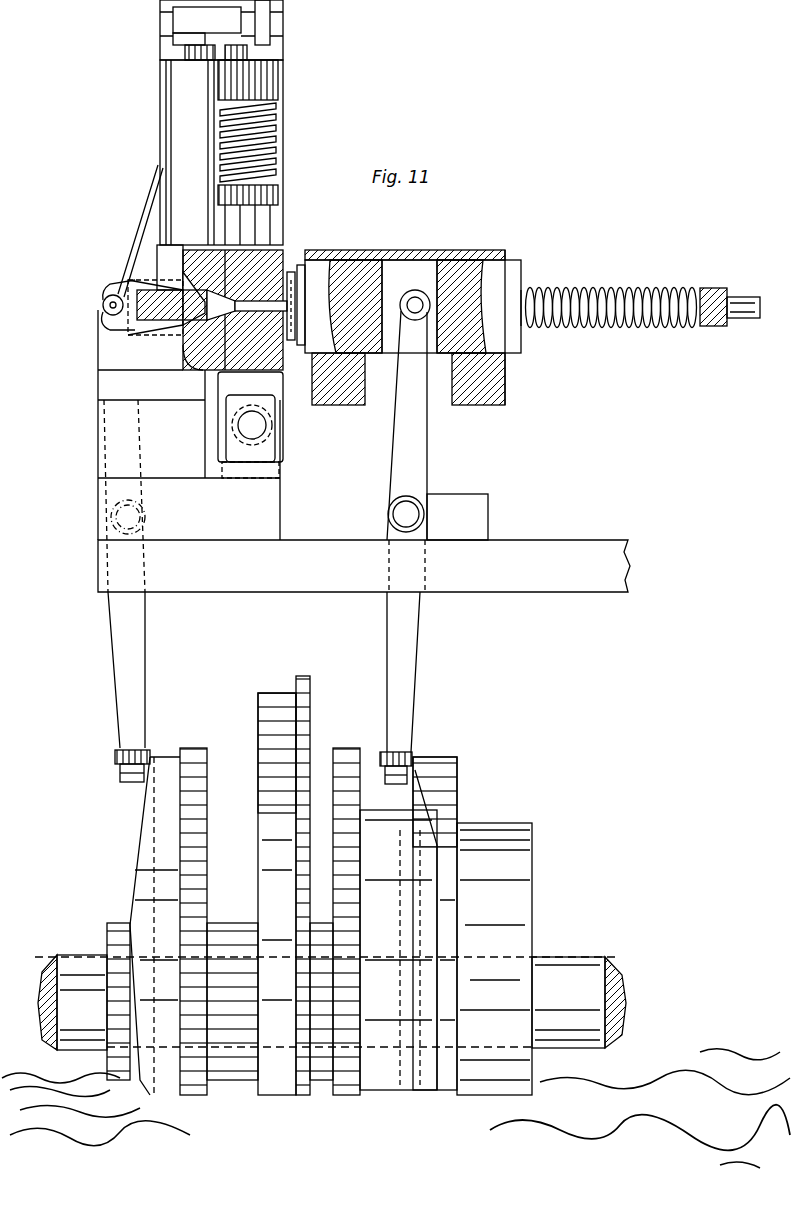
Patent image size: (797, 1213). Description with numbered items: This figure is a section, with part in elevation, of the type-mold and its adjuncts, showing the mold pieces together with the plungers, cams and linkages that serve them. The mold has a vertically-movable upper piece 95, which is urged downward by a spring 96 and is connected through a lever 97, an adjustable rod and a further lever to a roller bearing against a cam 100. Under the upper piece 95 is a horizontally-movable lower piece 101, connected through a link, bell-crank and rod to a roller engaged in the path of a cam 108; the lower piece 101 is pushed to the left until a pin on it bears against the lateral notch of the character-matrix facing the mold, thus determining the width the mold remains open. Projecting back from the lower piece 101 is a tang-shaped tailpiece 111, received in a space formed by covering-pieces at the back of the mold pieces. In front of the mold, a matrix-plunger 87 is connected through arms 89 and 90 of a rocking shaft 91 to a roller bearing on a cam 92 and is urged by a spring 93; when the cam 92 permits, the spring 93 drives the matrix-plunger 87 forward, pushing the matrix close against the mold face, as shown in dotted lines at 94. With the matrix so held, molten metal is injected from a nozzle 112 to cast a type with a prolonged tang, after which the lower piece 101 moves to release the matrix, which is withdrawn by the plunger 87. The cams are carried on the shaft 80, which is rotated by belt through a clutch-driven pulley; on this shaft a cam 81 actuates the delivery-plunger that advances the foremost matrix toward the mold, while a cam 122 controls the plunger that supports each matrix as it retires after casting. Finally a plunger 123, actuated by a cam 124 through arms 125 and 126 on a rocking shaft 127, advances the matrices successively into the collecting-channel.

The lever 97 is at (283, 30).
The spring 96 is at (278, 140).
The vertically-movable upper piece 95 is at (270, 255).
The nozzle 112 is at (212, 305).
The matrix position at mold face 94 is at (300, 345).
The matrix-plunger 87 is at (413, 332).
The spring 93 is at (600, 330).
The arm 89 is at (397, 448).
The rocking shaft 91 is at (438, 517).
The arm 90 is at (400, 688).
The arm 126 is at (127, 591).
The rocking shaft 127 is at (128, 517).
The horizontally-movable piece 101 is at (293, 445).
The tailpiece 111 is at (189, 425).
The arm 125 is at (110, 345).
The plunger 123 is at (155, 315).
The shaft 80 is at (582, 962).
The cam 124 is at (152, 808).
The cam 100 is at (207, 760).
The cam 108 is at (283, 683).
The cam 122 is at (310, 682).
The cam 81 is at (350, 750).
The cam 92 is at (457, 768).